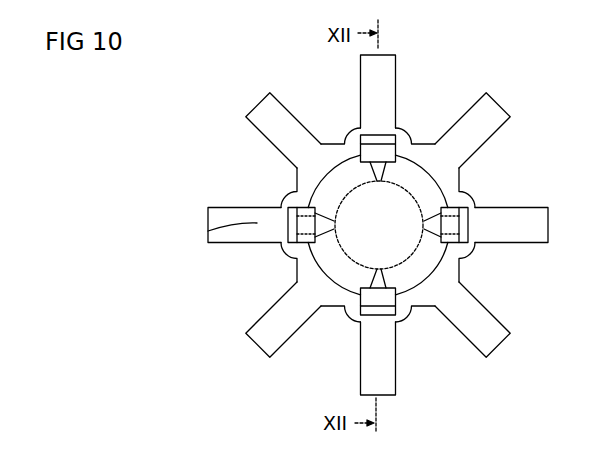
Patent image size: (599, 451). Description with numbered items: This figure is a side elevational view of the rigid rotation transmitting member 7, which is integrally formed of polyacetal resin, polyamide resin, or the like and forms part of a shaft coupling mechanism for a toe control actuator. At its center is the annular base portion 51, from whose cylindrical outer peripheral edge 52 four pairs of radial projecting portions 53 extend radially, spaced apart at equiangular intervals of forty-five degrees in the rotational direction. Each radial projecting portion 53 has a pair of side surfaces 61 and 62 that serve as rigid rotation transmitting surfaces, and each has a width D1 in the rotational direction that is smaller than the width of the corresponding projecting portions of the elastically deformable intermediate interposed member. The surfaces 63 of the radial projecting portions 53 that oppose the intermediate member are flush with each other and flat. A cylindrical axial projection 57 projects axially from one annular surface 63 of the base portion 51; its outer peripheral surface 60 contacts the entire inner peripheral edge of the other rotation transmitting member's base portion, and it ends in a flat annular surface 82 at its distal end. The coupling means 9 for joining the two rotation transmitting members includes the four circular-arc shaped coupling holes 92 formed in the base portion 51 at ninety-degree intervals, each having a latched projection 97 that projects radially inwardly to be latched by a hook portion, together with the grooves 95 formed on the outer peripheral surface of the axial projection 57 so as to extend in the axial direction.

The rotation transmitting member 7 is at (396, 59).
The coupling means 9 is at (283, 207).
The annular base portion 51 is at (342, 143).
The cylindrical outer peripheral edge 52 is at (412, 139).
The radial projecting portions 53 is at (369, 88).
The cylindrical axial projection 57 is at (435, 189).
The outer peripheral surface 60 is at (456, 262).
The side surface 61 is at (397, 70).
The side surface 62 is at (361, 70).
The annular surface 63 is at (302, 297).
The flat annular surface 82 is at (412, 280).
The coupling holes 92 is at (323, 213).
The grooves 95 is at (317, 226).
The latched projection 97 is at (323, 240).
The width D1 is at (208, 228).